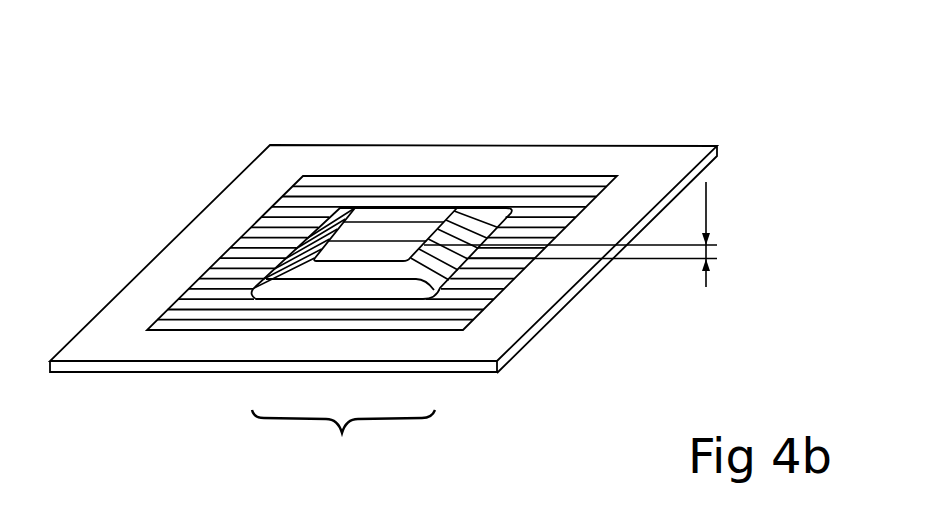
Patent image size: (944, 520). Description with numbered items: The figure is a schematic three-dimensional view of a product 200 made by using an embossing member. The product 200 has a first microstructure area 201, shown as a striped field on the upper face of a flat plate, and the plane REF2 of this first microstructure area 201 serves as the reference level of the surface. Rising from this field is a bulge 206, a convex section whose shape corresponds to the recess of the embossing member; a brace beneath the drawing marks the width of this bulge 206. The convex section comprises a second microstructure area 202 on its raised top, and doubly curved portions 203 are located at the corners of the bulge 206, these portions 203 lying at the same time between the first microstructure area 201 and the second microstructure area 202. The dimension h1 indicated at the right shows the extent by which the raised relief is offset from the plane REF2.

The product 200 is at (200, 203).
The first microstructure area 201 is at (577, 192).
The plane of the first microstructure area REF2 is at (538, 192).
The second microstructure area 202 is at (393, 225).
The doubly curved portion 203 is at (448, 224).
The extent h1 is at (584, 234).
The bulge 206 is at (343, 444).